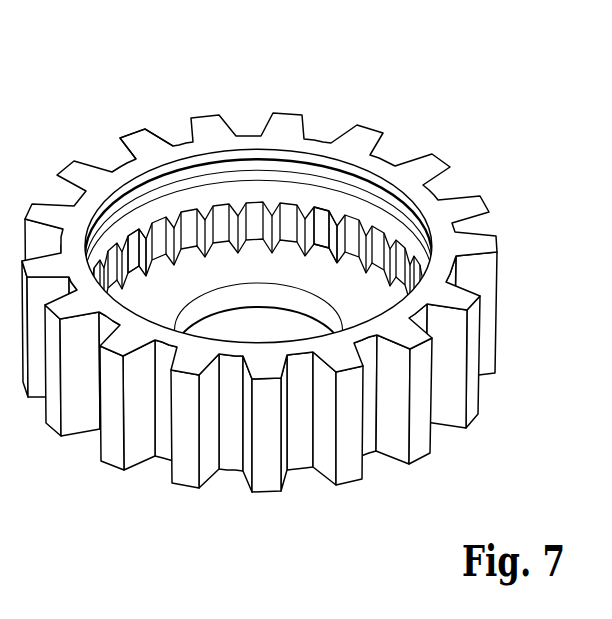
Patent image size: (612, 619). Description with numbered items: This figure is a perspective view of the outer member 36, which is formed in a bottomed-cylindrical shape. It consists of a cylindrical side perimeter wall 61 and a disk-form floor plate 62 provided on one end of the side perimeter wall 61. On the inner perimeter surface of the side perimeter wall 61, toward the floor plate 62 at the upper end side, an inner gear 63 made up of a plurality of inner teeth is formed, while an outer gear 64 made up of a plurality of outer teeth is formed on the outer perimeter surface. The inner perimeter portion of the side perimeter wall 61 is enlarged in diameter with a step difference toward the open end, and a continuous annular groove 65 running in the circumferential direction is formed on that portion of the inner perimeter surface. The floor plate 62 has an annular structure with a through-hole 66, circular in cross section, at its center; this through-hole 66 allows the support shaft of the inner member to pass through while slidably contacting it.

The outer member 36 is at (390, 92).
The side perimeter wall 61 is at (173, 147).
The floor plate 62 is at (249, 270).
The inner gear 63 is at (232, 216).
The outer gear 64 is at (126, 141).
The annular groove 65 is at (126, 143).
The through-hole 66 is at (232, 303).